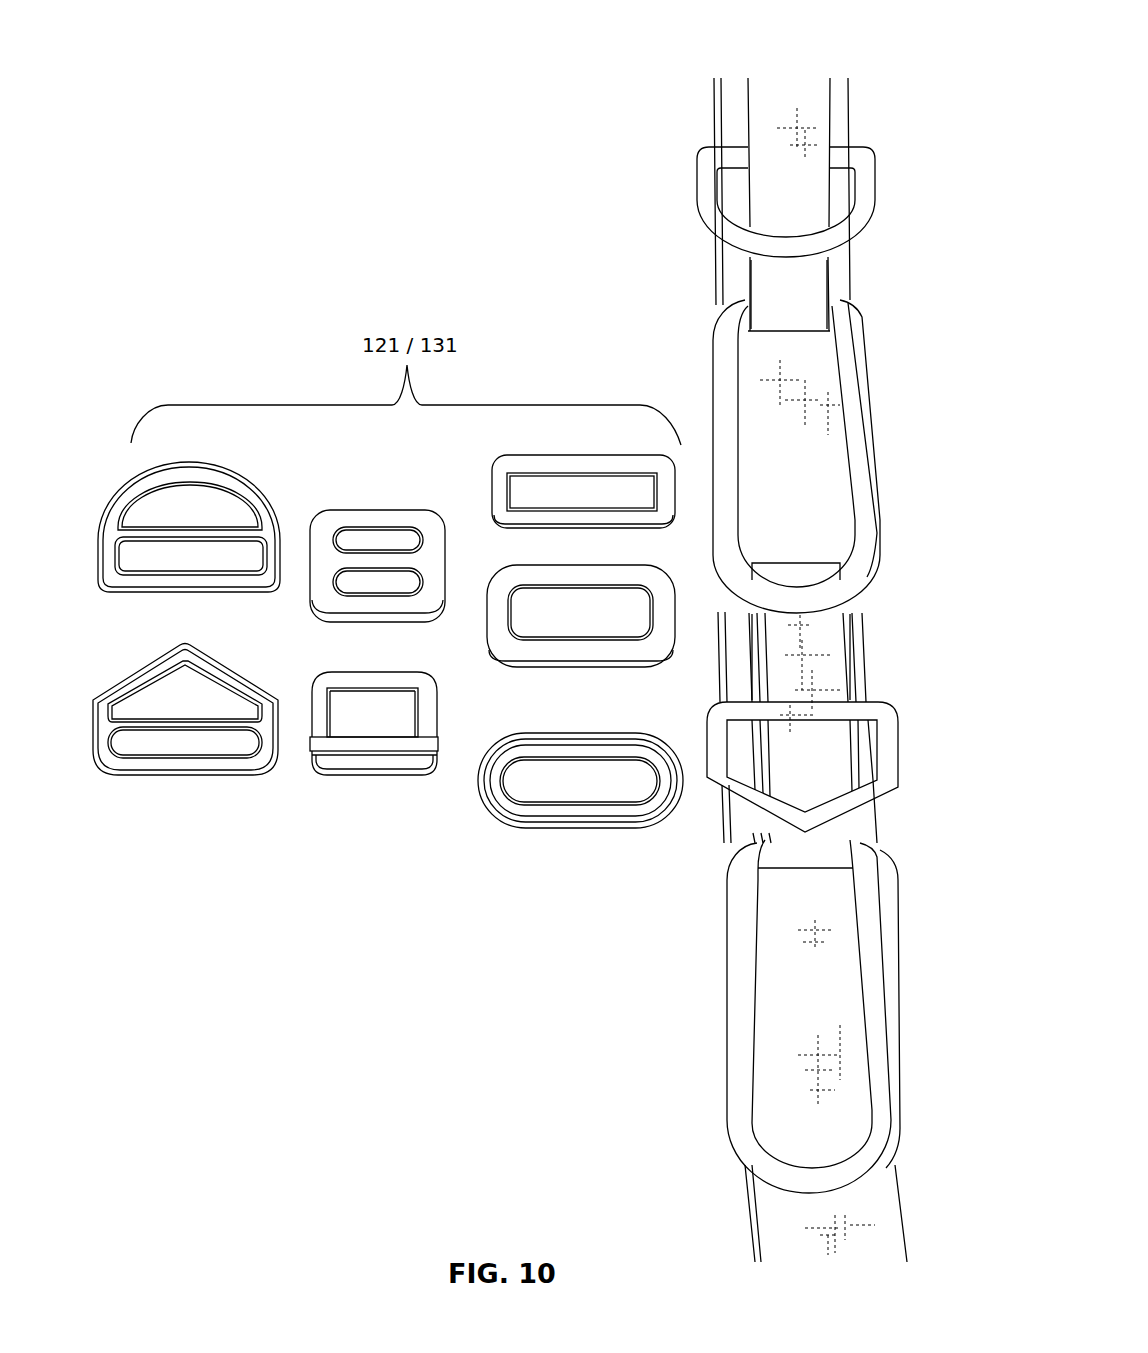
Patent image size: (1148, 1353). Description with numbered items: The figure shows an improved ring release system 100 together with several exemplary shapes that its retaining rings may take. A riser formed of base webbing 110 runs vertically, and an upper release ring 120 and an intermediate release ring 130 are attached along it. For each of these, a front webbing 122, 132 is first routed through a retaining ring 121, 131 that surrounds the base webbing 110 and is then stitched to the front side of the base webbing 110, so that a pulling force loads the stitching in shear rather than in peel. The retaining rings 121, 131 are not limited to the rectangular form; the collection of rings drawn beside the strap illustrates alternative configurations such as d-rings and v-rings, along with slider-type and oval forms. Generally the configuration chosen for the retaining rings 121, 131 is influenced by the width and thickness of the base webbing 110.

The ring release system 100 is at (212, 100).
The base webbing 110 is at (793, 1218).
The upper release ring 120 is at (842, 363).
The retaining ring 121 is at (710, 192).
The front webbing 122 is at (775, 297).
The intermediate release ring 130 is at (735, 997).
The retaining ring 131 is at (743, 793).
The front webbing 132 is at (818, 748).